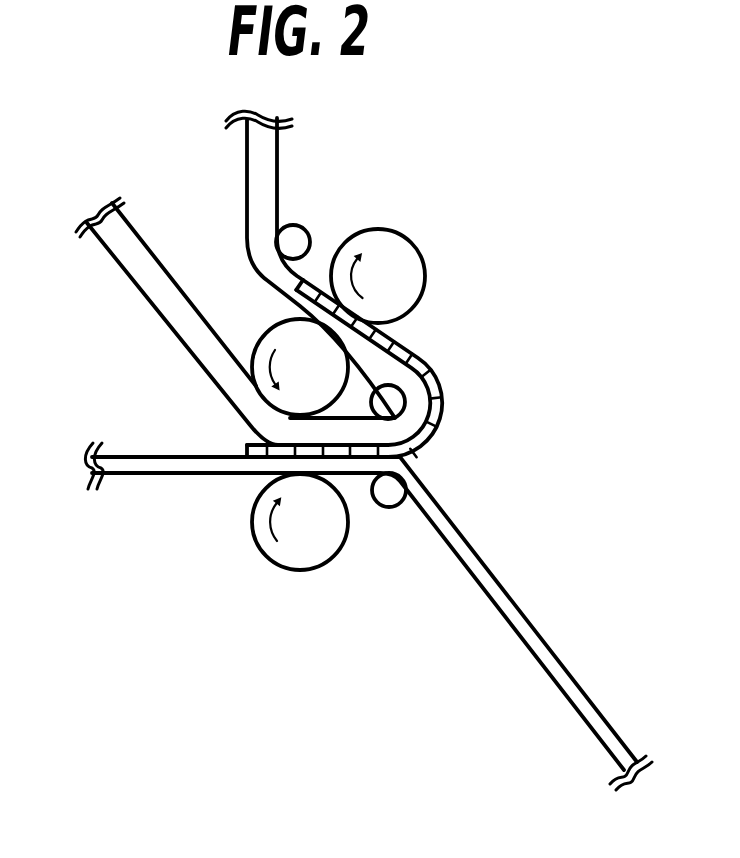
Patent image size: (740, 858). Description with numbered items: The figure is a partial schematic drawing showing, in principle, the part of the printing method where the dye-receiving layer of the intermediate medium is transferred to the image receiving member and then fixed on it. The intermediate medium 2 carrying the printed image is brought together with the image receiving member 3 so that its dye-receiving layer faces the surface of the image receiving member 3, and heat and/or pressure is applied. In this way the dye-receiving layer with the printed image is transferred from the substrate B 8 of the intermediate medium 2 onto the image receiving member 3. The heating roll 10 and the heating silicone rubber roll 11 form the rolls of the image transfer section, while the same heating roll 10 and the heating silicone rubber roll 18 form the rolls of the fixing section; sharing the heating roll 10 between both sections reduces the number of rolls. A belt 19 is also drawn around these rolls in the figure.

The intermediate medium 2 is at (77, 477).
The image receiving member 3 is at (93, 188).
The substrate B 8 is at (152, 472).
The heating roll 10 is at (302, 343).
The heating silicone rubber roll 11 is at (323, 563).
The heating silicone rubber roll 18 is at (398, 256).
The belt 19 is at (433, 372).